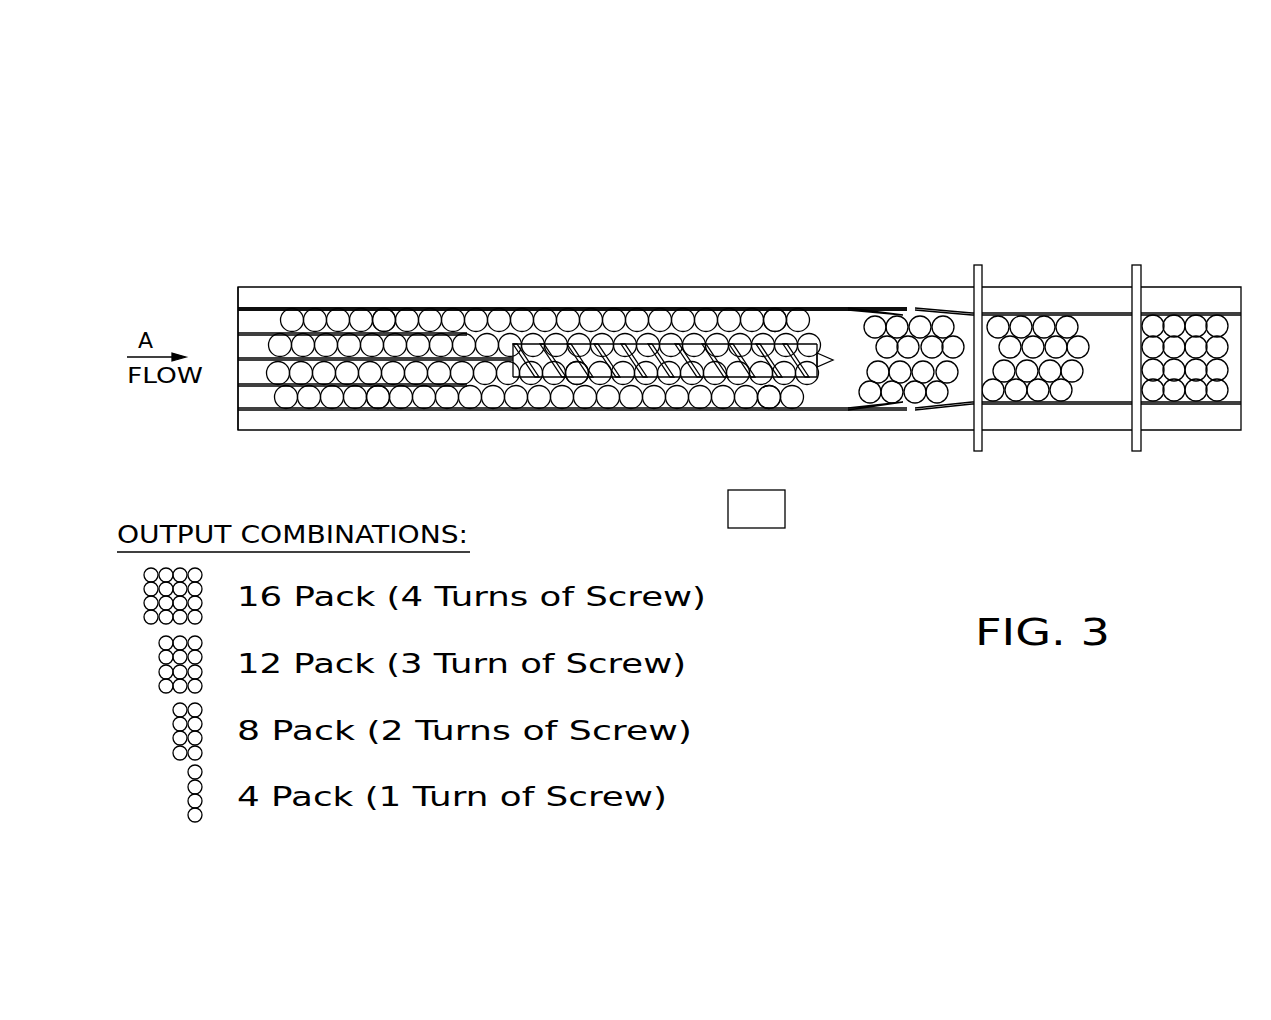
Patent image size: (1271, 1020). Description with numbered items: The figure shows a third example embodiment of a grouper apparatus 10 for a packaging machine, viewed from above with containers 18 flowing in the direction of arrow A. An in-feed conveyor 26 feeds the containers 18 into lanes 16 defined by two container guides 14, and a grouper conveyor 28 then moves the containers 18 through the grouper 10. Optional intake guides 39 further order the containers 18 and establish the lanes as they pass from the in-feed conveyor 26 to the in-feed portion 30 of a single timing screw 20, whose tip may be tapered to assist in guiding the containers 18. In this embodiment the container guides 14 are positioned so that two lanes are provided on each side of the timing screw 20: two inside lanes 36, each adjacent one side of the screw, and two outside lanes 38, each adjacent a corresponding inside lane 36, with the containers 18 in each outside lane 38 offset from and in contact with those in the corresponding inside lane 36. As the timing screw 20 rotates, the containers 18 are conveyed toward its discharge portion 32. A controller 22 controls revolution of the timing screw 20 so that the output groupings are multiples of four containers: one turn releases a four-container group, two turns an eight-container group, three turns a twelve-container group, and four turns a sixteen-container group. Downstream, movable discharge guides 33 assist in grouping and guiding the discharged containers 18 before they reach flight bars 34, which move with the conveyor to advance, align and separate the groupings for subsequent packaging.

The grouper apparatus 10 is at (707, 170).
The container guides 14 is at (632, 308).
The lanes 16 is at (447, 333).
The containers 18 is at (327, 347).
The timing screw 20 is at (579, 367).
The controller 22 is at (757, 411).
The in-feed conveyor 26 is at (250, 322).
The grouper conveyor 28 is at (418, 312).
The in-feed portion 30 is at (373, 335).
The discharge portion 32 is at (822, 358).
The movable discharge guides 33 is at (890, 308).
The flight bar 34 is at (982, 265).
The inside lanes 36 is at (810, 328).
The outside lanes 38 is at (777, 317).
The intake guides 39 is at (394, 330).